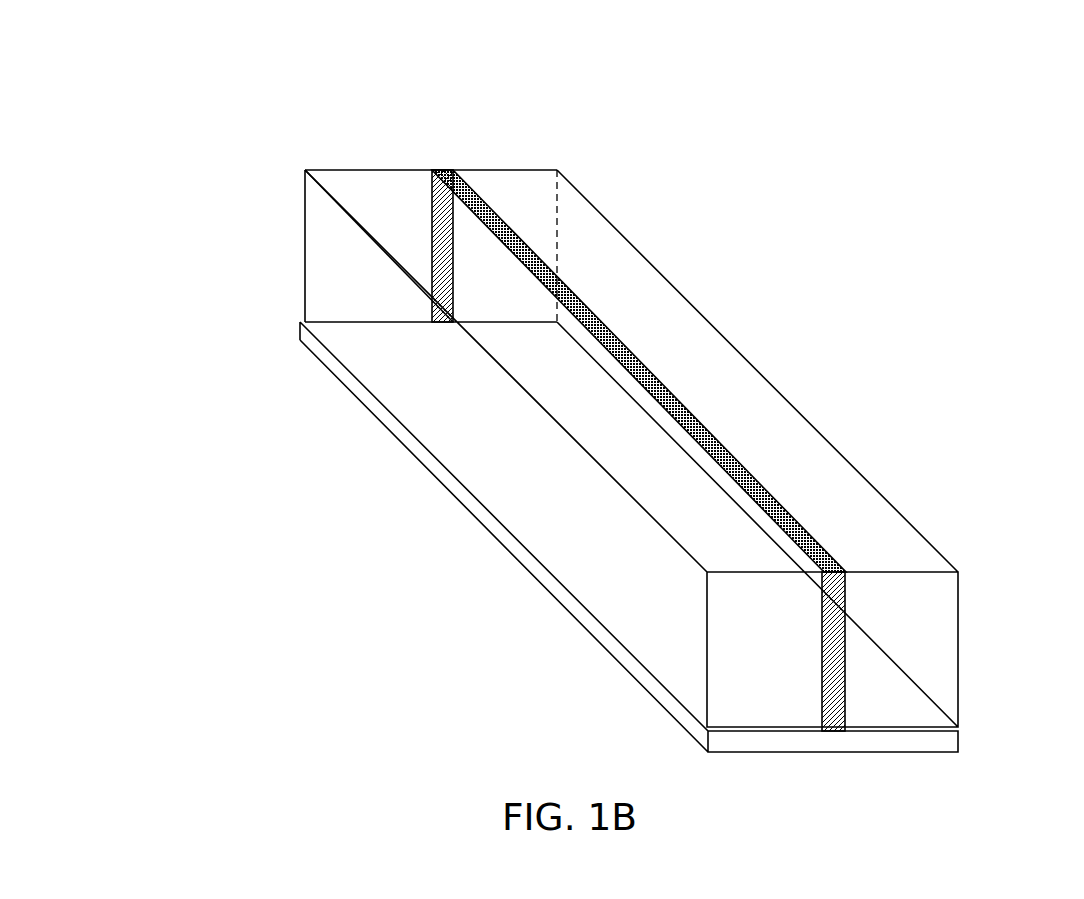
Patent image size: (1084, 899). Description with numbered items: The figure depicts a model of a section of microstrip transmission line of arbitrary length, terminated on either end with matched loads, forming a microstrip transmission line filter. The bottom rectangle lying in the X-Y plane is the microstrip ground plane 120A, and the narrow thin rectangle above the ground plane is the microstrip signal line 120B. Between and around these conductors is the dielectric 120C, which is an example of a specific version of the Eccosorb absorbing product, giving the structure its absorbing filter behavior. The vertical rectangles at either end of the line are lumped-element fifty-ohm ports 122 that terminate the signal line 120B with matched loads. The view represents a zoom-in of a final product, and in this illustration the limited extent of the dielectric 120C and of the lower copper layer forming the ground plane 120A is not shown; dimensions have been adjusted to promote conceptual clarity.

The microstrip ground plane 120A is at (598, 635).
The microstrip signal line 120B is at (323, 254).
The CR-124 dielectric 120C is at (578, 288).
The lumped-element 50-Ohm ports 122 is at (432, 207).